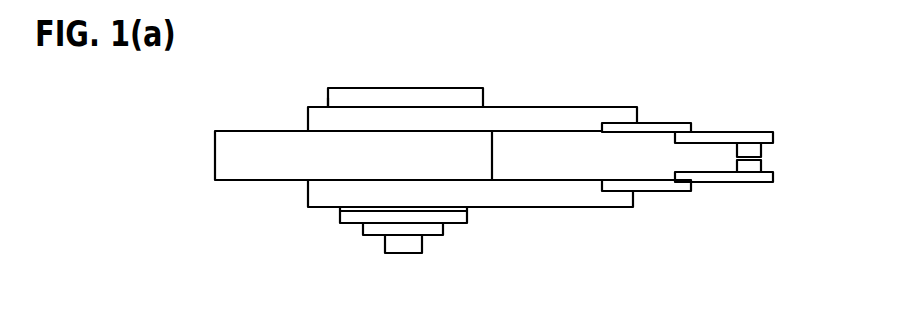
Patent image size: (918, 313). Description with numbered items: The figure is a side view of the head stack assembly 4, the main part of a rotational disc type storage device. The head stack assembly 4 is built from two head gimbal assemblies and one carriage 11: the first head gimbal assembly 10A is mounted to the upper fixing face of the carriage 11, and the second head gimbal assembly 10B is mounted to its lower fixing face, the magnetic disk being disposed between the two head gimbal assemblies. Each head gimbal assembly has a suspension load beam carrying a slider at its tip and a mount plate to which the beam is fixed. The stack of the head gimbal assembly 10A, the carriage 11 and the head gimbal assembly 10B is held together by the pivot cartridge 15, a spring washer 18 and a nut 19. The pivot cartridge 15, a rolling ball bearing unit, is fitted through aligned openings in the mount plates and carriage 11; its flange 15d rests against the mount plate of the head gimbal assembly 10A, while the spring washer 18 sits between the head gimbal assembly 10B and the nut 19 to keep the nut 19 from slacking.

The head stack assembly 4 is at (567, 32).
The first head gimbal assembly 10A is at (617, 66).
The second head gimbal assembly 10B is at (615, 250).
The carriage 11 is at (215, 143).
The pivot cartridge 15 is at (341, 85).
The flange 15d is at (327, 97).
The spring washer 18 is at (340, 217).
The nut 19 is at (358, 217).